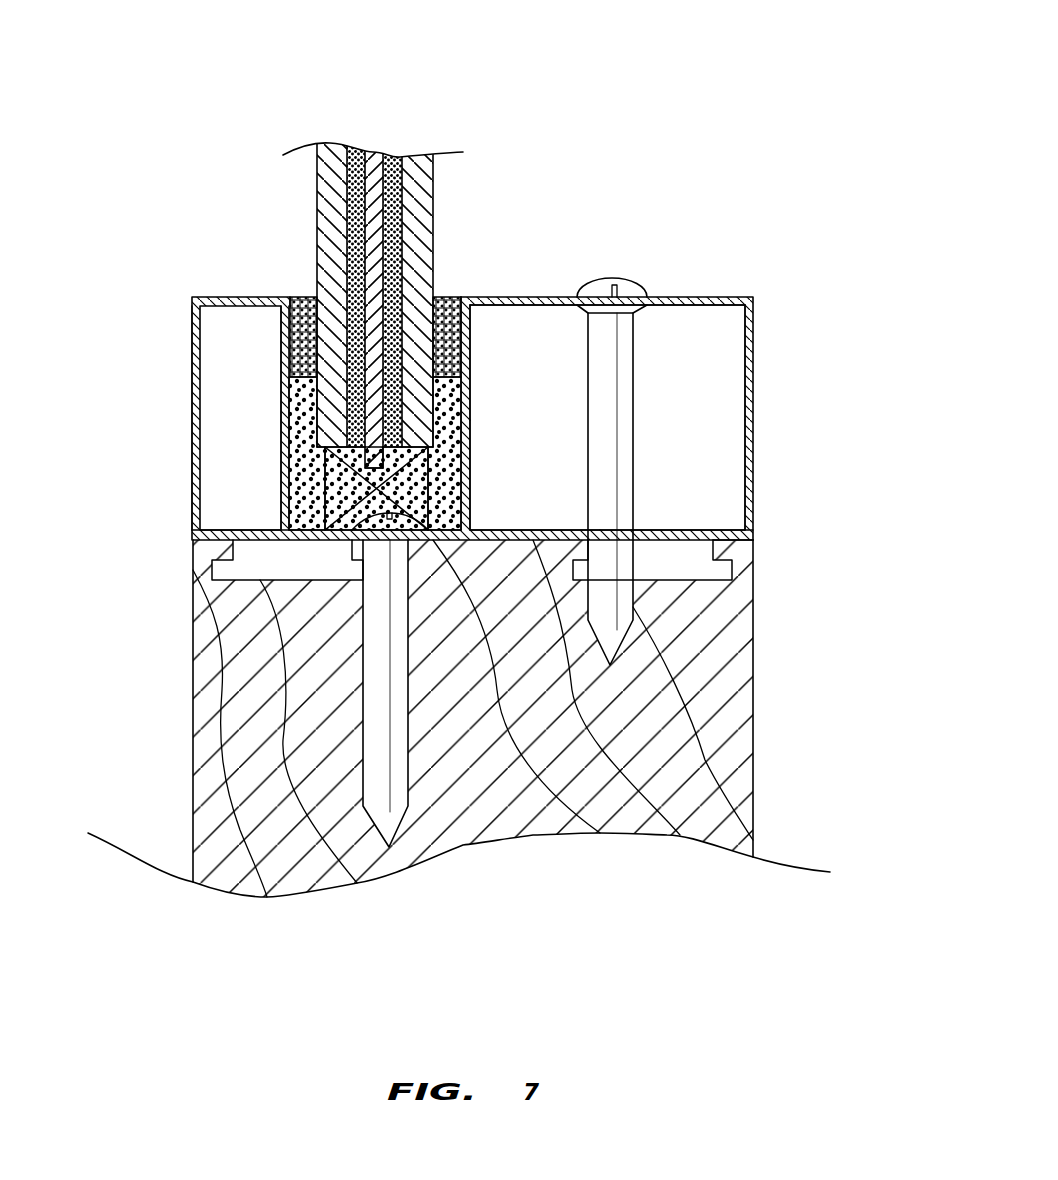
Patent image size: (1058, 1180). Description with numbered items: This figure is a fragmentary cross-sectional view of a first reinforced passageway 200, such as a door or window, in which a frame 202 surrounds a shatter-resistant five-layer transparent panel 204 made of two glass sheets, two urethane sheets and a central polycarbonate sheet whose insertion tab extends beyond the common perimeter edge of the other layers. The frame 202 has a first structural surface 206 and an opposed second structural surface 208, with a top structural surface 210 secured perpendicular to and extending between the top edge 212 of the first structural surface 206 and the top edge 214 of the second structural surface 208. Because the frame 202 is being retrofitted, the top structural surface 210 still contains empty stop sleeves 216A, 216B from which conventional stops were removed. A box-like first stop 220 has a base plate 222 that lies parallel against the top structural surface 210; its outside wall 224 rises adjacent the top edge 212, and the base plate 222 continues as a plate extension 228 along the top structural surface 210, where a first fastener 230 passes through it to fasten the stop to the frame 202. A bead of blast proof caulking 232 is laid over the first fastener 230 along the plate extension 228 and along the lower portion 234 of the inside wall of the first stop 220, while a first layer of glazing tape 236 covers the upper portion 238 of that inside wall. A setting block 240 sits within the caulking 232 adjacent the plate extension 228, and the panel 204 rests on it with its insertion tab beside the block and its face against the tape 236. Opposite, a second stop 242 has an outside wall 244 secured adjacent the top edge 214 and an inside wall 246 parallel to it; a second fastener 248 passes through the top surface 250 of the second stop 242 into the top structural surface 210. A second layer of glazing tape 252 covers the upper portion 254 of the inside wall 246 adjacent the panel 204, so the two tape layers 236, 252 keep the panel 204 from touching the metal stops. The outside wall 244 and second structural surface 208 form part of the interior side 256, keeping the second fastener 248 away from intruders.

The first reinforced passageway 200 is at (692, 104).
The frame 202 is at (757, 750).
The transparent panel 204 is at (409, 248).
The first structural surface 206 is at (193, 720).
The second structural surface 208 is at (753, 680).
The top structural surface 210 is at (572, 528).
The top edge of the first structural surface 212 is at (193, 540).
The top edge of the second structural surface 214 is at (753, 540).
The empty stop sleeve 216A is at (280, 563).
The empty stop sleeve 216B is at (668, 563).
The first stop 220 is at (200, 297).
The base plate 222 is at (233, 531).
The outside wall of the first stop 224 is at (192, 355).
The plate extension 228 is at (520, 526).
The first fastener 230 is at (395, 850).
The bead of blast proof caulking 232 is at (282, 427).
The lower portion of the inside wall 234 is at (282, 480).
The first layer of glazing tape 236 is at (300, 297).
The upper portion of the inside wall 238 is at (280, 327).
The setting block 240 is at (462, 333).
The second stop 242 is at (758, 295).
The outside wall of the second stop 244 is at (753, 418).
The inside wall of the second stop 246 is at (427, 530).
The second fastener 248 is at (633, 378).
The top surface of the second stop 250 is at (685, 297).
The second layer of glazing tape 252 is at (450, 297).
The upper portion of the inside wall of the second stop 254 is at (482, 300).
The interior side 256 is at (756, 494).